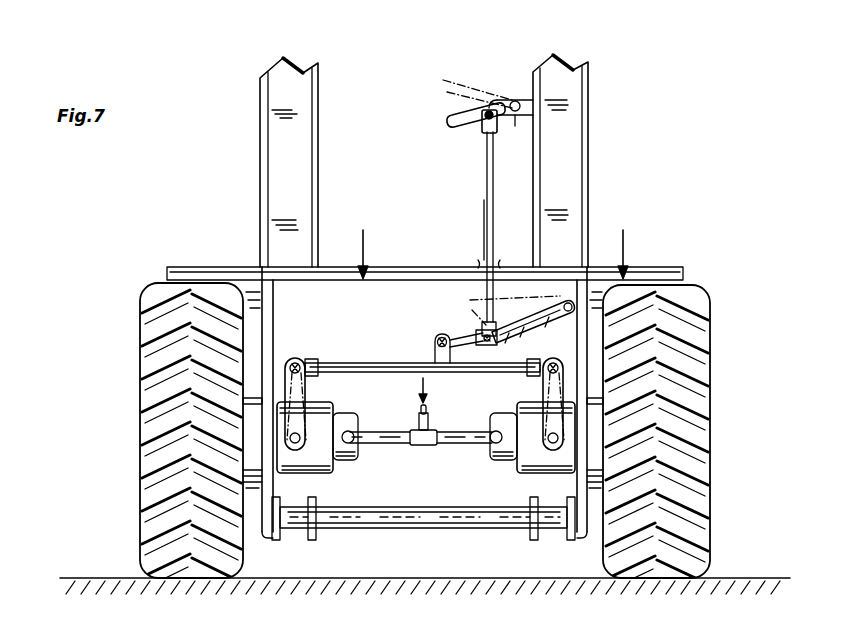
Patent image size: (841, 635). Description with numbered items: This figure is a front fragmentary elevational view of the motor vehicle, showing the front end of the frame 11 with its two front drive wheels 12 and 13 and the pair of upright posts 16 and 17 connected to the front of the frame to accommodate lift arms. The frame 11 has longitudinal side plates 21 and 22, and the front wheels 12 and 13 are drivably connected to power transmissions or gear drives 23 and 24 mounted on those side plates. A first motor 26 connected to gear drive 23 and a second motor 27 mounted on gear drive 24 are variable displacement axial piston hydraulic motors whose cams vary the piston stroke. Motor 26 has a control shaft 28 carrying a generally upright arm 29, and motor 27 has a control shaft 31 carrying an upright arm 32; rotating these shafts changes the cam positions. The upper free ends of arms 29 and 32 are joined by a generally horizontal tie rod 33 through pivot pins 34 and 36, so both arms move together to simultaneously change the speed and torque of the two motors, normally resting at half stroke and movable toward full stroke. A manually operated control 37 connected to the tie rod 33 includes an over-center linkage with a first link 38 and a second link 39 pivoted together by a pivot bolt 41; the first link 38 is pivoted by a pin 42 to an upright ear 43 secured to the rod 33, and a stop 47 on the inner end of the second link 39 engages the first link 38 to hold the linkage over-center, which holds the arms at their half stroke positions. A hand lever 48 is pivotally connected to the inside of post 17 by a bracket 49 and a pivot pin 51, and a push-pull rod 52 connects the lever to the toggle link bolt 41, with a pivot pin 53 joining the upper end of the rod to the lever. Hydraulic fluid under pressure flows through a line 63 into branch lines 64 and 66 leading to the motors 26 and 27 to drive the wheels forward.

The frame 11 is at (256, 264).
The front drive wheel 12 is at (140, 305).
The front drive wheel 13 is at (710, 341).
The upright post 16 is at (272, 108).
The upright post 17 is at (578, 126).
The longitudinal side plate 21 is at (266, 536).
The longitudinal side plate 22 is at (584, 536).
The gear drive 23 is at (280, 476).
The gear drive 24 is at (582, 468).
The first motor 26 is at (333, 471).
The second motor 27 is at (508, 471).
The control shaft 28 is at (305, 437).
The upright arm 29 is at (300, 391).
The control shaft 31 is at (546, 437).
The upright arm 32 is at (552, 391).
The tie rod 33 is at (362, 368).
The pivot pin 34 is at (298, 362).
The pivot pin 36 is at (555, 360).
The manually operated control 37 is at (478, 220).
The first link 38 is at (448, 334).
The second link 39 is at (537, 314).
The pivot bolt 41 is at (486, 342).
The pivot pin 42 is at (437, 338).
The upright ear 43 is at (434, 347).
The stop 47 is at (477, 326).
The hand lever 48 is at (455, 116).
The bracket 49 is at (526, 100).
The pivot pin 51 is at (516, 125).
The push-pull rod 52 is at (485, 153).
The pivot pin 53 is at (484, 108).
The line 63 is at (419, 414).
The branch line 64 is at (470, 444).
The branch line 66 is at (386, 444).